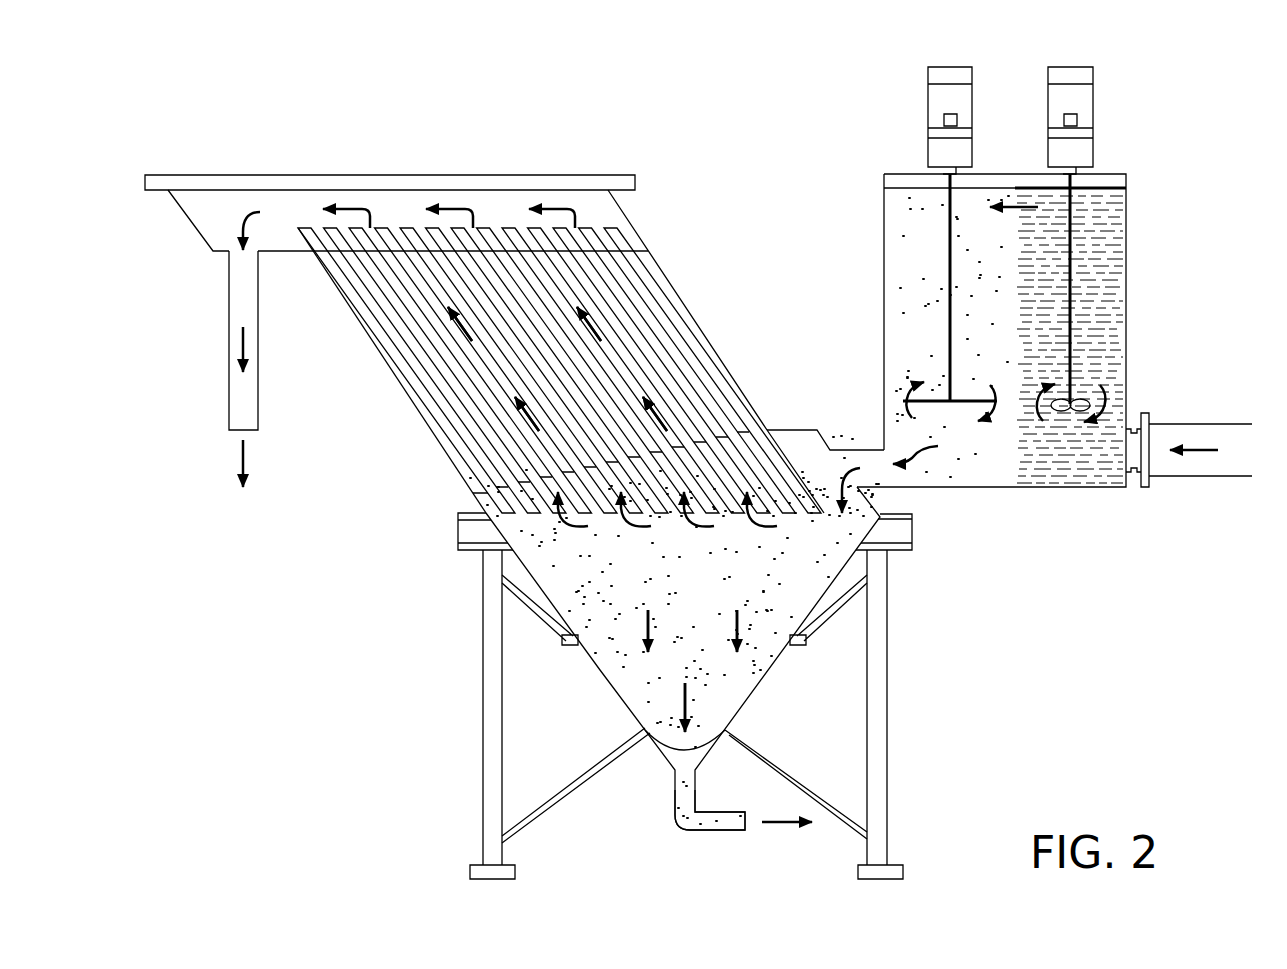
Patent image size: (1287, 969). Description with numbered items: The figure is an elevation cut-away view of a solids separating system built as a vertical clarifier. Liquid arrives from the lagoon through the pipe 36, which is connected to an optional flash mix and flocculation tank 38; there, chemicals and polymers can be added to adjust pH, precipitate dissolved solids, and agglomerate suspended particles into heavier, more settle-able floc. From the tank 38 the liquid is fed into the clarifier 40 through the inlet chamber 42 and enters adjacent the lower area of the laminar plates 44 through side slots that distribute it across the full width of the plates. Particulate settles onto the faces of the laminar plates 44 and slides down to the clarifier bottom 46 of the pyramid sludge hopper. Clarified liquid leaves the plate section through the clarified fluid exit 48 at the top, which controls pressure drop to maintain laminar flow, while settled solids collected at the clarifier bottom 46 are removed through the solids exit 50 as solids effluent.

The pipe 36 is at (1225, 425).
The flash mix and flocculation tank 38 is at (1110, 174).
The clarifier 40 is at (707, 322).
The inlet chamber 42 is at (858, 448).
The laminar plates 44 is at (462, 447).
The clarifier bottom 46 is at (600, 596).
The clarified fluid exit 48 is at (237, 432).
The solids exit 50 is at (745, 822).